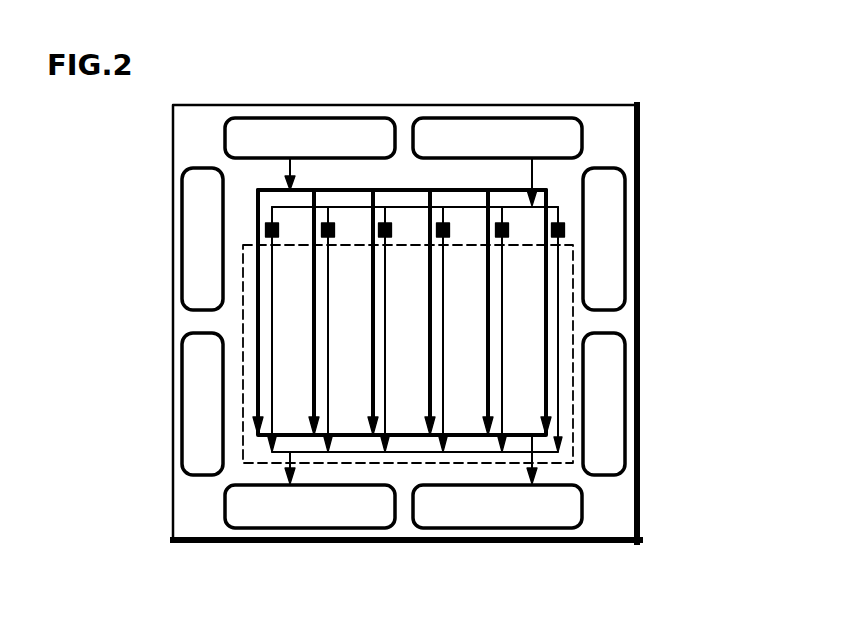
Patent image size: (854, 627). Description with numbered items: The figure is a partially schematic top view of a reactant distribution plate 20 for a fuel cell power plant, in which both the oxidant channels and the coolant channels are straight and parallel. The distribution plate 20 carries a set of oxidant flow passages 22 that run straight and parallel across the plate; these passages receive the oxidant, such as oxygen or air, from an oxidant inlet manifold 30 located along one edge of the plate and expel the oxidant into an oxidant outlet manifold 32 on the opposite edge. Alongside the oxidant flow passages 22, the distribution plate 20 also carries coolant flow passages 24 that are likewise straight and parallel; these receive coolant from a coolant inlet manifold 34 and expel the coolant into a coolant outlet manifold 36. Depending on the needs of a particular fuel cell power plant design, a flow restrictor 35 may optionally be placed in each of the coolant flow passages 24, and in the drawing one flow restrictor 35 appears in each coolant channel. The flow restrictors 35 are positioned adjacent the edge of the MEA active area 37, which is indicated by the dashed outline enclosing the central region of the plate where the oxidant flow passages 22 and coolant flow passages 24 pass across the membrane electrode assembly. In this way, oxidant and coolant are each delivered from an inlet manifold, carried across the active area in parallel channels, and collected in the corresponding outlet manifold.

The distribution plate 20 is at (143, 163).
The oxidant flow passages 22 is at (258, 332).
The coolant flow passages 24 is at (558, 313).
The oxidant inlet manifold 30 is at (310, 128).
The oxidant outlet manifold 32 is at (500, 513).
The coolant inlet manifold 34 is at (498, 128).
The flow restrictor 35 is at (560, 227).
The coolant outlet manifold 36 is at (310, 515).
The MEA active area 37 is at (523, 246).